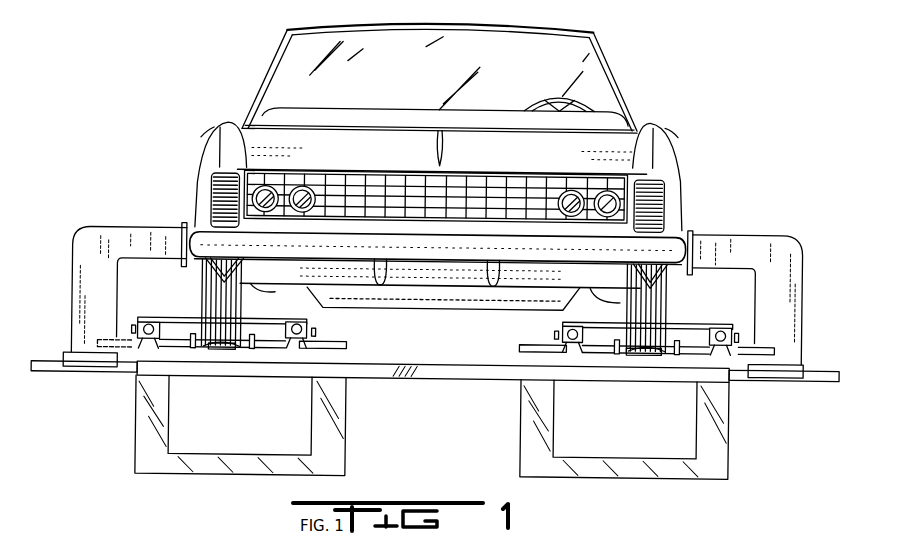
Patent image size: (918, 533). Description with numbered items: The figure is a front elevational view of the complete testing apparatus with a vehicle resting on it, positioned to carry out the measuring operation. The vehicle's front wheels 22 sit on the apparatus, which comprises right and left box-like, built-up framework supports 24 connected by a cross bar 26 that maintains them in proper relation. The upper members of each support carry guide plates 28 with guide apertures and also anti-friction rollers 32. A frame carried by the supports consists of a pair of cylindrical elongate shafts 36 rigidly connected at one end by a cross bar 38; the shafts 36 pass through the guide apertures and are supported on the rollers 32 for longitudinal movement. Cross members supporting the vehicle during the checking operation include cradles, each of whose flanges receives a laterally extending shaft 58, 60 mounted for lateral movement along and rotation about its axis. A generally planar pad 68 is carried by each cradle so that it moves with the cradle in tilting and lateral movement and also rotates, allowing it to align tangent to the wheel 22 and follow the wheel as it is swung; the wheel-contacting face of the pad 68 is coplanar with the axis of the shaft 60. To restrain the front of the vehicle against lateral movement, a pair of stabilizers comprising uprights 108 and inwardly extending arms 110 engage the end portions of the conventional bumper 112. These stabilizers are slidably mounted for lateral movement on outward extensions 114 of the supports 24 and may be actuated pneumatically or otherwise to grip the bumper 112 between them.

The wheel 22 is at (203, 281).
The framework supports 24 is at (347, 441).
The cross bar 26 is at (403, 380).
The guide plates 28 is at (316, 332).
The anti-friction rollers 32 is at (136, 354).
The cylindrical elongate shafts 36 is at (151, 328).
The cross bar 38 is at (274, 323).
The laterally extending shaft 58 is at (348, 345).
The laterally extending shaft 60 is at (124, 319).
The pad 68 is at (210, 353).
The uprights 108 is at (77, 291).
The inwardly extending arms 110 is at (113, 237).
The bumper 112 is at (447, 258).
The outward extensions 114 is at (40, 376).